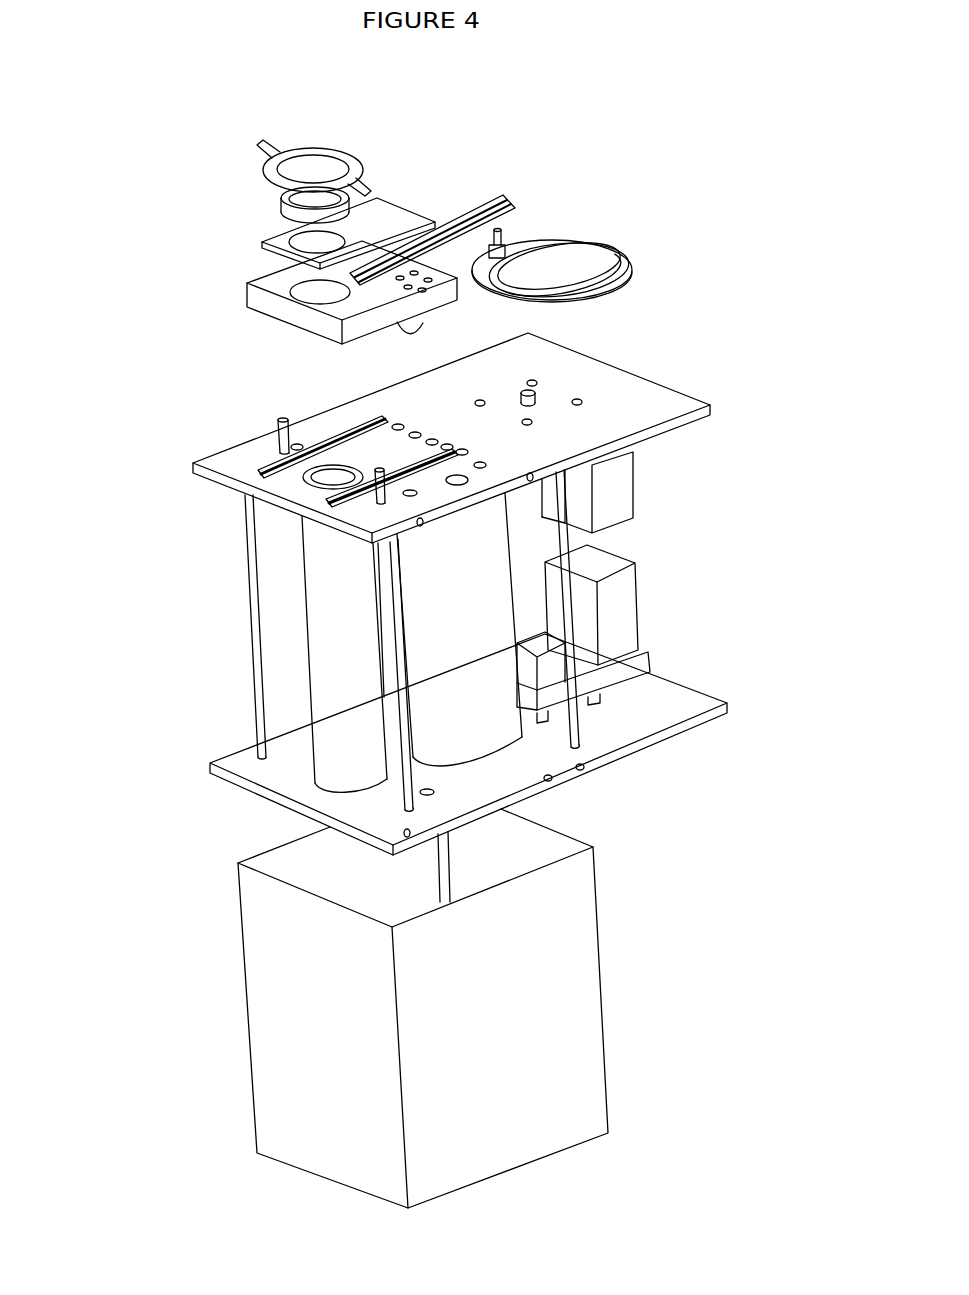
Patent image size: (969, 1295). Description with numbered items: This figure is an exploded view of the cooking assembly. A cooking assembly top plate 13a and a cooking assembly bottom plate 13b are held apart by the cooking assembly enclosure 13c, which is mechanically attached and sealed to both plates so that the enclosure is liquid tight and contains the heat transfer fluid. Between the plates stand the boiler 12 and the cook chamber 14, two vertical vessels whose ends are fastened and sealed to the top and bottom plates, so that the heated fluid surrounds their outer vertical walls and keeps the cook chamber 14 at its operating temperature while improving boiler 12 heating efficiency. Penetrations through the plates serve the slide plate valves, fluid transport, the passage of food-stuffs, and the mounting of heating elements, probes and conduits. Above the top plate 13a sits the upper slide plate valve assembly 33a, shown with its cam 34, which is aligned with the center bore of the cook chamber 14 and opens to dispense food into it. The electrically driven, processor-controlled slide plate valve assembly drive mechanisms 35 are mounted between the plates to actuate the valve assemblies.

The boiler 12 is at (560, 668).
The cooking assembly top plate 13a is at (493, 436).
The cooking assembly bottom plate 13b is at (511, 744).
The cooking assembly enclosure 13c is at (478, 1008).
The cook chamber 14 is at (343, 700).
The upper slide plate valve assembly 33a is at (273, 457).
The cam 34 is at (618, 254).
The slide plate valve assembly drive mechanisms 35 is at (645, 587).